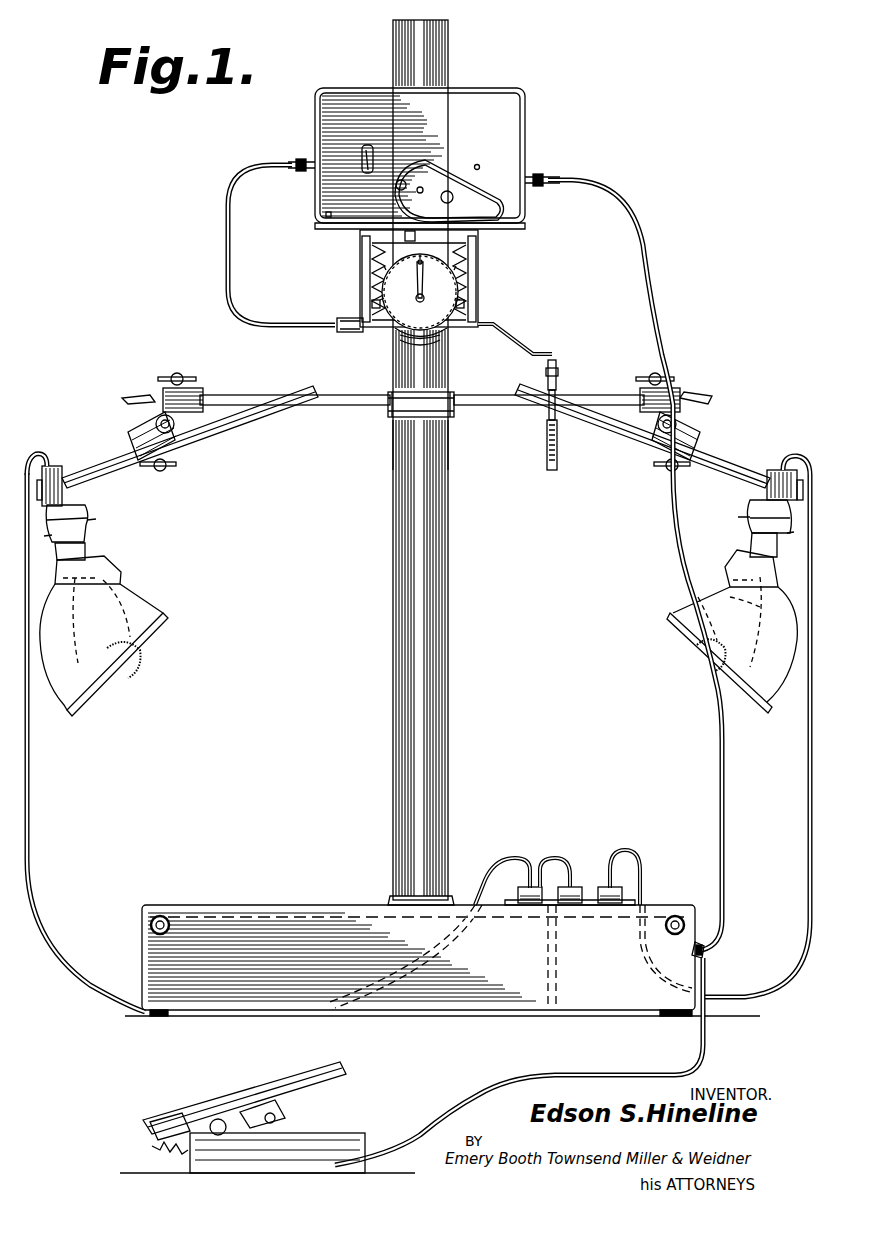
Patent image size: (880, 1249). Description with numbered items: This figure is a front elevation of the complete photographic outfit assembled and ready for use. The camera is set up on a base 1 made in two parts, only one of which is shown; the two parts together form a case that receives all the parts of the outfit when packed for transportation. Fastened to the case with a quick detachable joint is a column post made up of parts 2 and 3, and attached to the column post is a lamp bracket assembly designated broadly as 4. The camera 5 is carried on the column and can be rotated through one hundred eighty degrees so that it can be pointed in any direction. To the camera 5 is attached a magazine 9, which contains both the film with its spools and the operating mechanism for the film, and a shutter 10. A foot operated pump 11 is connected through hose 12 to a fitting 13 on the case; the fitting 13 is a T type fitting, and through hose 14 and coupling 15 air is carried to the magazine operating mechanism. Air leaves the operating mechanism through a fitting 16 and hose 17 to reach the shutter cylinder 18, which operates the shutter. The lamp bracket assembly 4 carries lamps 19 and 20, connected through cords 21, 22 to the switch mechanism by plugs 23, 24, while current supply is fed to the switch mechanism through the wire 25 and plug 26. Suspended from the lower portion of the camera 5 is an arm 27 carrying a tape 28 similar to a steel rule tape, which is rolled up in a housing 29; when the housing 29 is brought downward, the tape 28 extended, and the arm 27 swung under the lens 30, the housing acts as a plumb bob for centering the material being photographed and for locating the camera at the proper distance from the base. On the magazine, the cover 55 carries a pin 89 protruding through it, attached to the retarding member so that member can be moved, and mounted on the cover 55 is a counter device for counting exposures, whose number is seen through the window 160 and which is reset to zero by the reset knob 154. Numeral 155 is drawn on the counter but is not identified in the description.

The base 1 is at (385, 895).
The column post part 2 is at (447, 512).
The column post part 3 is at (446, 438).
The lamp assembly 4 is at (240, 403).
The camera 5 is at (487, 235).
The magazine 9 is at (418, 158).
The shutter 10 is at (445, 328).
The foot operated pump 11 is at (352, 1060).
The hose 12 is at (616, 1071).
The fitting 13 is at (710, 944).
The hose 14 is at (666, 356).
The coupling 15 is at (540, 177).
The fitting 16 is at (299, 160).
The hose 17 is at (230, 236).
The shutter cylinder 18 is at (348, 318).
The lamp 19 is at (758, 702).
The lamp 20 is at (128, 590).
The cord 21 is at (808, 816).
The cord 22 is at (32, 785).
The plug 23 is at (625, 892).
The plug 24 is at (531, 888).
The wire 25 is at (562, 862).
The plug 26 is at (577, 886).
The arm 27 is at (515, 348).
The tape 28 is at (558, 386).
The housing 29 is at (560, 455).
The lens 30 is at (412, 340).
The cover 55 is at (512, 116).
The pin 89 is at (362, 165).
The reset knob 154 is at (453, 196).
The button 155 is at (423, 187).
The window 160 is at (403, 180).